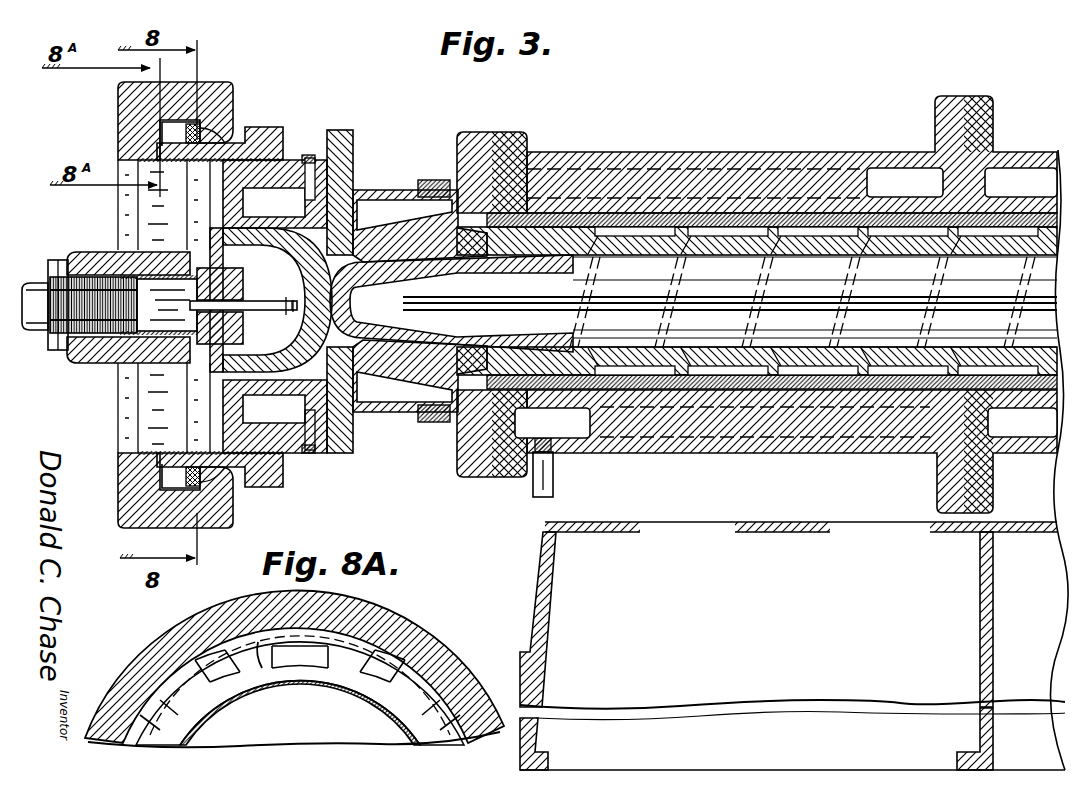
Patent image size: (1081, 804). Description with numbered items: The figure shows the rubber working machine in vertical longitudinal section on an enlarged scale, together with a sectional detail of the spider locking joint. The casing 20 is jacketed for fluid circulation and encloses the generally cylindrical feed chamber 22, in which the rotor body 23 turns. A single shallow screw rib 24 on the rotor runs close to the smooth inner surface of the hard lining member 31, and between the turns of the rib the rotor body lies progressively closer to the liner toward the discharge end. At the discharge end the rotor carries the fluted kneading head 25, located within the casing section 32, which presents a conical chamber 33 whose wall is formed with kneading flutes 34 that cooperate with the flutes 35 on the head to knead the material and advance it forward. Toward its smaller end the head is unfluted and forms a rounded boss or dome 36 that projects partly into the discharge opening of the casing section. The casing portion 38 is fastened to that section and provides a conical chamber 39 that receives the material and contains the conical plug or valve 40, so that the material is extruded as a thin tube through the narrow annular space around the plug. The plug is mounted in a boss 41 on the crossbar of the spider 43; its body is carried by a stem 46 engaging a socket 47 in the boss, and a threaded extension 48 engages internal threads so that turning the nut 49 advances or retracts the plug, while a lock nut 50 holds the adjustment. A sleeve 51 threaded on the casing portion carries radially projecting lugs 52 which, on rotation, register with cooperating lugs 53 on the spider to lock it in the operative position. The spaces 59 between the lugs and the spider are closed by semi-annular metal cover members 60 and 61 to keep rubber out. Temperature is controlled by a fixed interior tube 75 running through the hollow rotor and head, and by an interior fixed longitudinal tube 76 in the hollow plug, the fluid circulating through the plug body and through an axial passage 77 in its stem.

In FIG. 3, the casing 20 is at (890, 152).
In FIG. 3, the feed chamber 22 is at (1030, 225).
In FIG. 3, the rotor body 23 is at (1000, 240).
In FIG. 3, the screw rib 24 is at (875, 228).
In FIG. 3, the fluted kneading head 25 is at (418, 345).
In FIG. 3, the lining member 31 is at (818, 213).
In FIG. 3, the casing section 32 is at (370, 198).
In FIG. 3, the conical chamber 33 is at (462, 400).
In FIG. 3, the kneading flutes 34 is at (432, 395).
In FIG. 3, the flutes 35 is at (435, 245).
In FIG. 3, the rounded boss or dome 36 is at (352, 305).
In FIG. 3, the casing portion 38 is at (300, 160).
In FIG. 3, the chamber 39 is at (360, 215).
In FIG. 3, the plug or valve 40 is at (345, 405).
In FIG. 3, the boss 41 is at (82, 262).
In FIG. 3, the spider 43 is at (125, 96).
In FIG. 8A, the spider 43 is at (204, 640).
In FIG. 3, the stem 46 is at (238, 288).
In FIG. 3, the socket 47 is at (162, 277).
In FIG. 3, the threaded extension 48 is at (98, 285).
In FIG. 3, the nut 49 is at (38, 286).
In FIG. 3, the lock nut 50 is at (48, 335).
In FIG. 3, the sleeve 51 is at (264, 132).
In FIG. 8A, the sleeve 51 is at (268, 690).
In FIG. 3, the lugs 52 is at (193, 124).
In FIG. 8A, the lugs 52 is at (330, 647).
In FIG. 3, the lugs 53 is at (212, 130).
In FIG. 8A, the lugs 53 is at (258, 642).
In FIG. 3, the spaces 59 is at (162, 133).
In FIG. 3, the cover member 60 is at (150, 440).
In FIG. 3, the cover member 61 is at (150, 197).
In FIG. 8A, the cover member 61 is at (362, 700).
In FIG. 3, the interior tube 75 is at (750, 250).
In FIG. 3, the interior fixed longitudinal tube 76 is at (294, 310).
In FIG. 3, the axial passage 77 is at (248, 312).